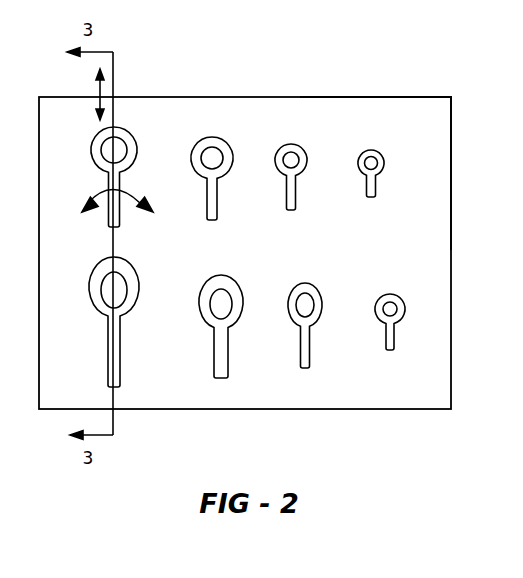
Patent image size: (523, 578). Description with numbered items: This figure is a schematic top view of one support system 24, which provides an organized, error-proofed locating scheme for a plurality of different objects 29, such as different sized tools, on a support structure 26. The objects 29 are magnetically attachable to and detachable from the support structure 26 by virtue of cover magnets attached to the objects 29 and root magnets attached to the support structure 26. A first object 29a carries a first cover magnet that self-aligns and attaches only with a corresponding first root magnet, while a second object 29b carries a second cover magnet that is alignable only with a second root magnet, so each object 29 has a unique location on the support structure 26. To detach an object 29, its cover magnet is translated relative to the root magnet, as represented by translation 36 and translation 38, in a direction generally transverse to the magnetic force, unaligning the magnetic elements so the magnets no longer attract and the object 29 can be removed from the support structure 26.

The support system 24 is at (283, 82).
The support structure 26 is at (364, 115).
The object 29 is at (225, 293).
The first object 29a is at (112, 184).
The second object 29b is at (112, 346).
The translation 36 is at (98, 90).
The translation 38 is at (142, 193).